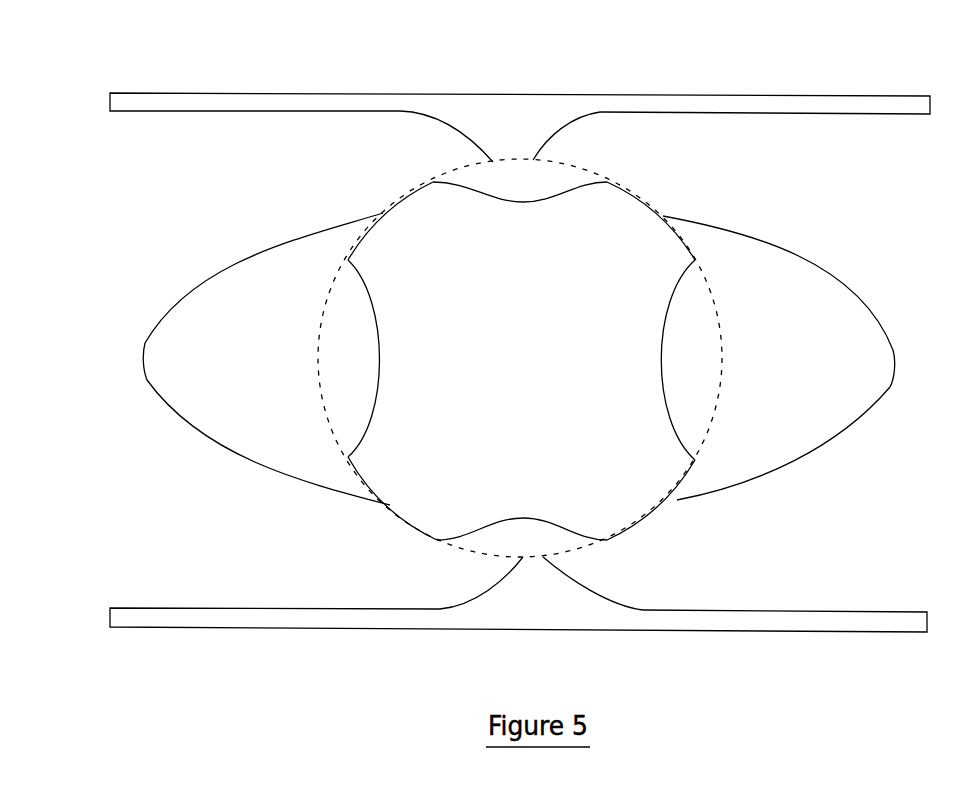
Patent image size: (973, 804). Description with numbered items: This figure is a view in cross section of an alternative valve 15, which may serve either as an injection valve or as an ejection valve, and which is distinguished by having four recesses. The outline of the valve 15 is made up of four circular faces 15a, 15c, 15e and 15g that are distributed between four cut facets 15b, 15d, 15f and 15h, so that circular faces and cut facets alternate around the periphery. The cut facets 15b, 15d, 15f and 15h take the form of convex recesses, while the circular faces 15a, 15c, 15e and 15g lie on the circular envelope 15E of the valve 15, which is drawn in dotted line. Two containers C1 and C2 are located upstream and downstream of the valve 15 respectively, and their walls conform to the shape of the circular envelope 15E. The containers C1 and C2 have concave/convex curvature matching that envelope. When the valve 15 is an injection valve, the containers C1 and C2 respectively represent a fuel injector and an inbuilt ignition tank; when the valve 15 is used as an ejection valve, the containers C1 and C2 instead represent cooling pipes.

The valve 15 is at (567, 345).
The circular face 15a is at (663, 210).
The cut facet 15b is at (698, 340).
The circular face 15c is at (655, 517).
The cut facet 15d is at (535, 545).
The circular face 15e is at (390, 507).
The cut facet 15f is at (370, 360).
The circular face 15g is at (387, 205).
The cut facet 15h is at (527, 177).
The circular envelope 15E is at (583, 163).
The container C1 is at (223, 252).
The container C2 is at (867, 296).